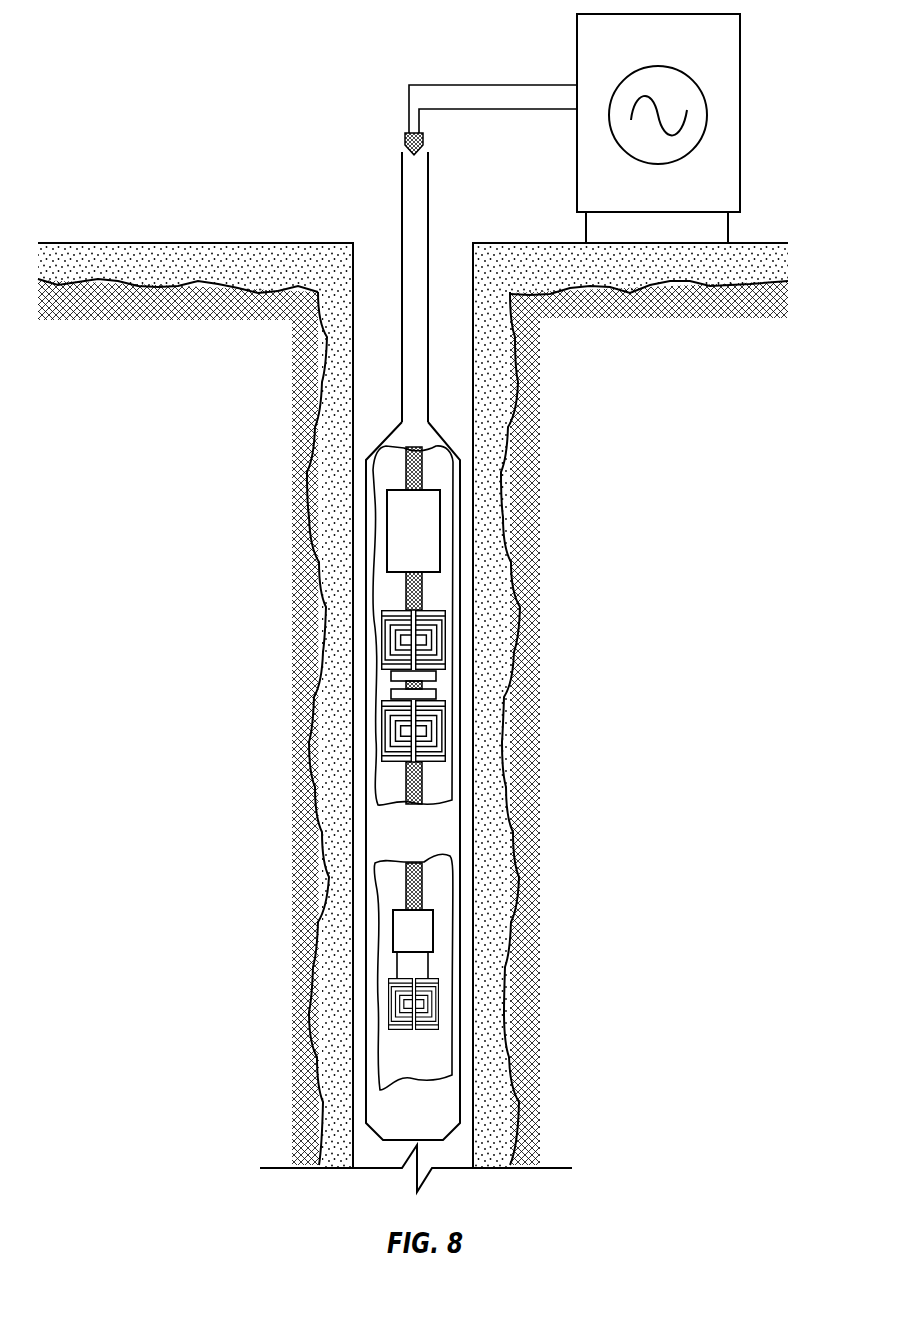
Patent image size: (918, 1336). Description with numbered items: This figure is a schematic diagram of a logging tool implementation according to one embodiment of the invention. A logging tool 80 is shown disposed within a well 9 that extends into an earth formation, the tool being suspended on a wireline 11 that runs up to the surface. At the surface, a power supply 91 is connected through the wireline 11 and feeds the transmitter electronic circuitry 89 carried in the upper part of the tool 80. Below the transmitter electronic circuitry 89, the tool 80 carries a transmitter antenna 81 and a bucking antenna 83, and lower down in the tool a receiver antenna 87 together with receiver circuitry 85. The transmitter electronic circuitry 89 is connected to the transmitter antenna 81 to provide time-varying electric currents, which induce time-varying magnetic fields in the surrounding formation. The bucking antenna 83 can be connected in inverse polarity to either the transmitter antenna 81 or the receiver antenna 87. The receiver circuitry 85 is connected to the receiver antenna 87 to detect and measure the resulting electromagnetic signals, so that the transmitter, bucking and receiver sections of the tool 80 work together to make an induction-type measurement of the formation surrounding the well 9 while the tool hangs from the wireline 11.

The well 9 is at (376, 236).
The wireline 11 is at (428, 194).
The power supply 91 is at (706, 105).
The logging tool 80 is at (368, 593).
The transmitter antenna 81 is at (367, 690).
The bucking antenna 83 is at (373, 780).
The transmitter electronic circuitry 89 is at (430, 532).
The receiver circuitry 85 is at (433, 930).
The receiver antenna 87 is at (438, 1002).